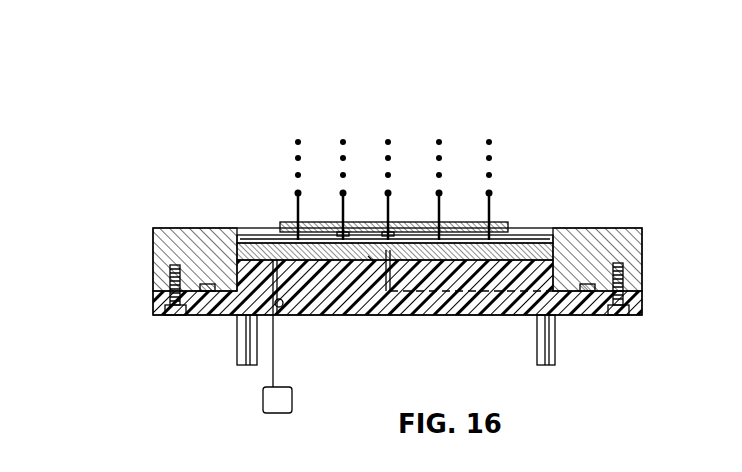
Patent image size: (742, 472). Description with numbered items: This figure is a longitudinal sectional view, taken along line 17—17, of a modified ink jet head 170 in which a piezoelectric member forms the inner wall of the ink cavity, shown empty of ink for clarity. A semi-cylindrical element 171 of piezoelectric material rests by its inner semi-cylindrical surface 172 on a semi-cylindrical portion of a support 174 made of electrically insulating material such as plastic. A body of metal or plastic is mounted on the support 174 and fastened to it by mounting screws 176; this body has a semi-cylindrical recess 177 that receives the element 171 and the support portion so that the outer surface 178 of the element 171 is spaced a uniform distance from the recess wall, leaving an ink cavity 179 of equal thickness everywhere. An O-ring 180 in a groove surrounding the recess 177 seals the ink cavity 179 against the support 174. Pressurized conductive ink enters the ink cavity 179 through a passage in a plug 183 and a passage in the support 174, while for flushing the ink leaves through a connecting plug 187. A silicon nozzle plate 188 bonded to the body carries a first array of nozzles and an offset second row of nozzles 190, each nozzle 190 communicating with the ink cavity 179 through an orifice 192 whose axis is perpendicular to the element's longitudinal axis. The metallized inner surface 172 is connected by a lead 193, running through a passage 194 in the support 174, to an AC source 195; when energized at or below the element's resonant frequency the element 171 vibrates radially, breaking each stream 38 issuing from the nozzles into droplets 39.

The section line 17— 17 is at (386, 122).
The streams 38 is at (441, 206).
The droplets 39 is at (442, 174).
The ink jet head 170 is at (183, 168).
The semi-cylindrical element 171 is at (535, 236).
The inner semi-cylindrical surface 172 is at (385, 262).
The support 174 is at (445, 318).
The mounting screws 176 is at (618, 313).
The semi-cylindrical recess 177 is at (372, 262).
The outer surface 178 is at (255, 241).
The ink cavity 179 is at (521, 242).
The O-ring 180 is at (215, 292).
The plug 183 is at (537, 347).
The connecting plug 187 is at (237, 343).
The nozzle plate 188 is at (280, 212).
The nozzles 190 is at (381, 222).
The orifice 192 is at (338, 222).
The lead 193 is at (276, 368).
The passage 194 is at (285, 318).
The AC source 195 is at (293, 404).